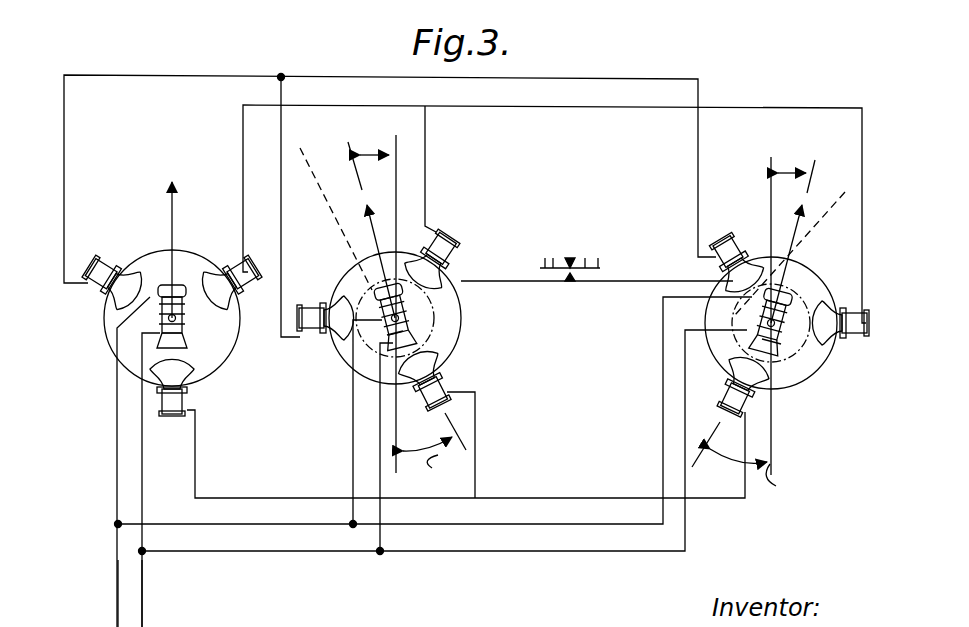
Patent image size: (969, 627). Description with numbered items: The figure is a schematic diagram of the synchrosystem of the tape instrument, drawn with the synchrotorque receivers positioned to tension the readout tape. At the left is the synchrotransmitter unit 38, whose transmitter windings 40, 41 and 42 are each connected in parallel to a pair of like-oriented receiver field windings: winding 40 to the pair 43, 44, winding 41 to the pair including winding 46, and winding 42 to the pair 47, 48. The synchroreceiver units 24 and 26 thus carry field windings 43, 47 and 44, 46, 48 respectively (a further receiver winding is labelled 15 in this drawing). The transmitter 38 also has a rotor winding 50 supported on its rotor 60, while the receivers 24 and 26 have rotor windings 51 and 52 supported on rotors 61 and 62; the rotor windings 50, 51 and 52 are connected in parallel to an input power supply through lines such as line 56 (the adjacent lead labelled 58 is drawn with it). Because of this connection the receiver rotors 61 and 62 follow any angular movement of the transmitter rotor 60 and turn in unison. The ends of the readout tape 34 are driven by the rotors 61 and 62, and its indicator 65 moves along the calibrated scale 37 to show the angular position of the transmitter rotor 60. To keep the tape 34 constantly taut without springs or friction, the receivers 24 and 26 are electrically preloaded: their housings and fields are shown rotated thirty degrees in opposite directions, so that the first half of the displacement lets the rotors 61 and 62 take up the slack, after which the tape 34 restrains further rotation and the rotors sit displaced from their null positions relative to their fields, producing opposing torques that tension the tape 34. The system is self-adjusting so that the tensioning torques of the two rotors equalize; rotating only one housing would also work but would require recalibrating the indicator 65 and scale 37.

The synchrotransmitter unit 38 is at (90, 342).
The transmitter winding 40 is at (110, 285).
The transmitter winding 41 is at (226, 272).
The transmitter winding 42 is at (187, 375).
The rotor winding 50 is at (192, 306).
The rotor 60 is at (180, 346).
The synchroreceiver unit 24 is at (340, 380).
The field winding 43 is at (327, 340).
The pole piece coil of second instrument 15 is at (435, 275).
The field winding 47 is at (438, 365).
The rotor winding 51 is at (423, 308).
The rotor 61 is at (422, 340).
The calibrated scale 37 is at (598, 264).
The indicator 65 is at (566, 281).
The readout tape 34 is at (622, 288).
The synchroreceiver unit 26 is at (843, 398).
The field winding 44 is at (720, 238).
The field winding 46 is at (836, 354).
The field winding 48 is at (753, 385).
The rotor winding 52 is at (769, 333).
The rotor 62 is at (774, 362).
The supply lead 58 is at (117, 591).
The line 56 is at (143, 591).